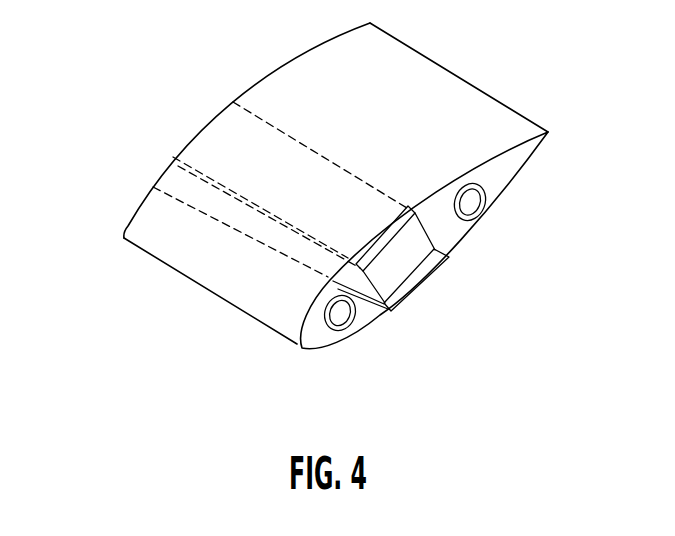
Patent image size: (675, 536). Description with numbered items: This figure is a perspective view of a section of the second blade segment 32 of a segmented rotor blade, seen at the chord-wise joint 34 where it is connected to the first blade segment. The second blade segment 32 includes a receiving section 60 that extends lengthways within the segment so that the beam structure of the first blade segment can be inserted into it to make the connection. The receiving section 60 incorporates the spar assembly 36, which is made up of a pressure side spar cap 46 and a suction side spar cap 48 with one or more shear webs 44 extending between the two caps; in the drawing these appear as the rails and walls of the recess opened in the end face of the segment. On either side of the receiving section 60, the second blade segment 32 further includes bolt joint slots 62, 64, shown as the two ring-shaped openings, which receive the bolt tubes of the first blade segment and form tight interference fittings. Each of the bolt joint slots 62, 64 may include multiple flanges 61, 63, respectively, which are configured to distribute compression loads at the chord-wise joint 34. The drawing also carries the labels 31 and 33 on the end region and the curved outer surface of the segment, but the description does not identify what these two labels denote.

The end face 31 is at (531, 163).
The second blade segment 32 is at (440, 83).
The curved outer surface 33 is at (297, 85).
The chord-wise joint 34 is at (323, 366).
The spar assembly 36 is at (300, 168).
The shear web 44 is at (428, 240).
The pressure side spar cap 46 is at (397, 307).
The suction side spar cap 48 is at (383, 232).
The receiving section 60 is at (405, 268).
The flanges 61 is at (327, 304).
The bolt joint slot 62 is at (343, 318).
The flanges 63 is at (466, 185).
The bolt joint slot 64 is at (473, 199).